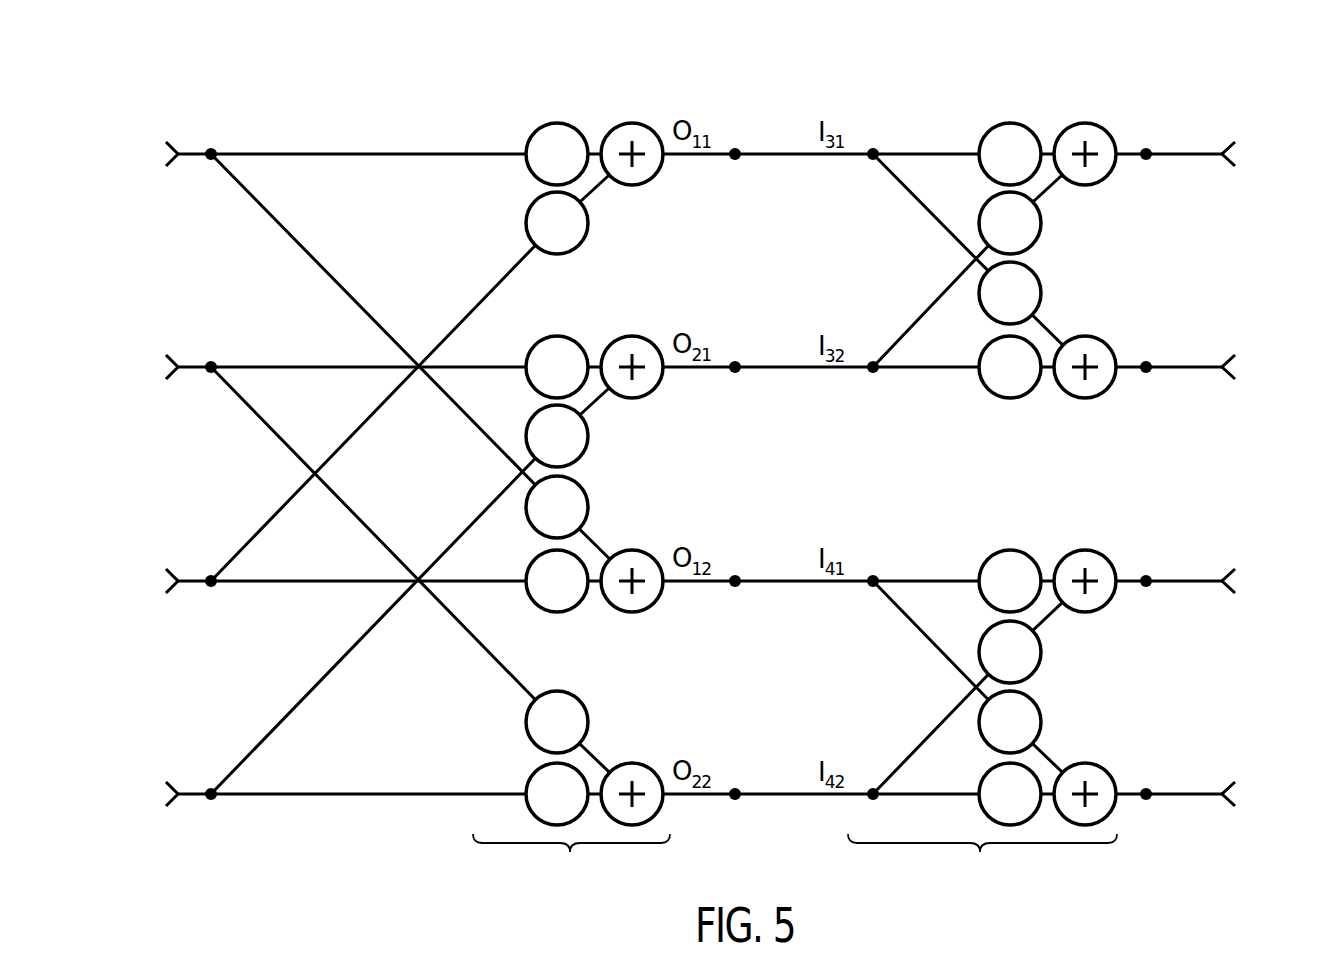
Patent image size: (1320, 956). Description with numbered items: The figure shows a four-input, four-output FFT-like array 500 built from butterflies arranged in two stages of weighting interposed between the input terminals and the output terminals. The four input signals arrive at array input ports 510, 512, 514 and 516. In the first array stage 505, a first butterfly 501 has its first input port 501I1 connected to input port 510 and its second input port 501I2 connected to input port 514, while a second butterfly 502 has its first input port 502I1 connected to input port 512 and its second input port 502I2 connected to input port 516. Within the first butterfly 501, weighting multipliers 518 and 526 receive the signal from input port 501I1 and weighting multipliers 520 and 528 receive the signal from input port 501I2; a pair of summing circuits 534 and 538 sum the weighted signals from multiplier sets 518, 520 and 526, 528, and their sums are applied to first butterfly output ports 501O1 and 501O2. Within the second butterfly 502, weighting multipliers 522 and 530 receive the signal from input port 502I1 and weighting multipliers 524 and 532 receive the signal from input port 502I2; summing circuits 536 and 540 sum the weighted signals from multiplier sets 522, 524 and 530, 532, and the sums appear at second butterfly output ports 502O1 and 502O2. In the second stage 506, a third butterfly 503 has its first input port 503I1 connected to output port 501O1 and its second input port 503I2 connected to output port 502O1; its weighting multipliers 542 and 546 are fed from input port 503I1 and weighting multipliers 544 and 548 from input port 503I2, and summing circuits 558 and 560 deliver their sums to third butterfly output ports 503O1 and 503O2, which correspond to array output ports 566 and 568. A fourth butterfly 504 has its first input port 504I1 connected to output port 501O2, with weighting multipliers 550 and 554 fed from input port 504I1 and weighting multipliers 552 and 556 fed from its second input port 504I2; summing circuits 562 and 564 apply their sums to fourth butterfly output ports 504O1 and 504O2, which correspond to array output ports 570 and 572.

The array 500 is at (710, 471).
The first butterfly 501 is at (494, 292).
The second butterfly 502 is at (480, 515).
The third butterfly 503 is at (922, 206).
The fourth butterfly 504 is at (918, 738).
The first array stage 505 is at (571, 859).
The second stage 506 is at (982, 858).
The array input port 510 is at (168, 147).
The array input port 512 is at (168, 360).
The array input port 514 is at (170, 574).
The array input port 516 is at (170, 787).
The weighting multiplier 518 is at (543, 130).
The weighting multiplier 520 is at (527, 225).
The weighting multiplier 522 is at (529, 348).
The weighting multiplier 524 is at (531, 420).
The weighting multiplier 526 is at (533, 532).
The weighting multiplier 528 is at (530, 600).
The weighting multiplier 530 is at (528, 711).
The weighting multiplier 532 is at (527, 782).
The summing circuit 534 is at (620, 124).
The summing circuit 536 is at (614, 336).
The summing circuit 538 is at (624, 550).
The summing circuit 540 is at (624, 765).
The weighting multiplier 542 is at (1031, 124).
The weighting multiplier 544 is at (978, 222).
The weighting multiplier 546 is at (978, 296).
The weighting multiplier 548 is at (983, 388).
The weighting multiplier 550 is at (1036, 552).
The weighting multiplier 552 is at (978, 652).
The weighting multiplier 554 is at (1040, 705).
The weighting multiplier 556 is at (977, 786).
The summing circuit 558 is at (1082, 122).
The summing circuit 560 is at (1085, 336).
The summing circuit 562 is at (1082, 549).
The summing circuit 564 is at (1083, 764).
The array output port 566 is at (1224, 140).
The array output port 568 is at (1230, 383).
The array output port 570 is at (1228, 592).
The array output port 572 is at (1222, 784).
The first input port of first butterfly 501I1 is at (211, 150).
The second input port of first butterfly 501I2 is at (210, 577).
The first input port of second butterfly 502I1 is at (211, 363).
The second input port of second butterfly 502I2 is at (210, 790).
The first butterfly output port 501O1 is at (735, 149).
The first butterfly output port 501O2 is at (735, 576).
The second butterfly output port 502O1 is at (735, 362).
The second butterfly output port 502O2 is at (735, 790).
The first input port of third butterfly 503I1 is at (875, 149).
The second input port of third butterfly 503I2 is at (873, 373).
The first input port of fourth butterfly 504I1 is at (875, 577).
The second input port of fourth butterfly 504I2 is at (872, 788).
The third butterfly output port 503O1 is at (1146, 148).
The third butterfly output port 503O2 is at (1145, 363).
The fourth butterfly output port 504O1 is at (1145, 575).
The fourth butterfly output port 504O2 is at (1147, 797).